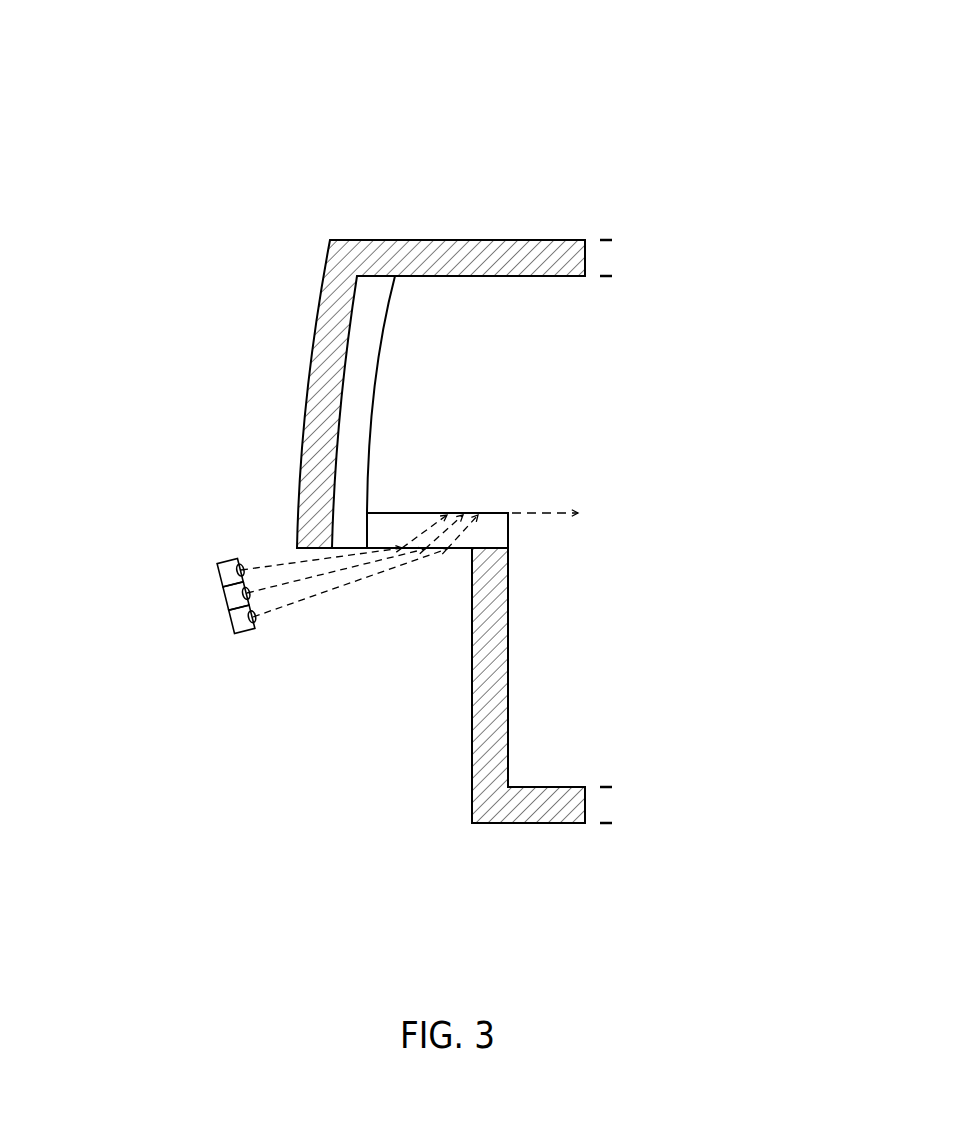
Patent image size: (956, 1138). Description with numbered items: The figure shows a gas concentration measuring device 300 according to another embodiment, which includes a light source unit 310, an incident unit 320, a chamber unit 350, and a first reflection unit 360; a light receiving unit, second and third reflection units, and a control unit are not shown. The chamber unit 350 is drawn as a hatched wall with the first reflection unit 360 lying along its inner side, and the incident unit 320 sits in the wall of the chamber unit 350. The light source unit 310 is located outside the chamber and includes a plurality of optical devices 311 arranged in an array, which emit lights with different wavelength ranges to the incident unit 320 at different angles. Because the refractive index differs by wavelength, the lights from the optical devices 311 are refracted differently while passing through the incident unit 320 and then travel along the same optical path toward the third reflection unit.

The gas concentration measuring device 300 is at (666, 55).
The light source unit 310 is at (175, 607).
The optical devices 311 is at (220, 562).
The incident unit 320 is at (398, 530).
The chamber unit 350 is at (335, 290).
The first reflection unit 360 is at (368, 312).